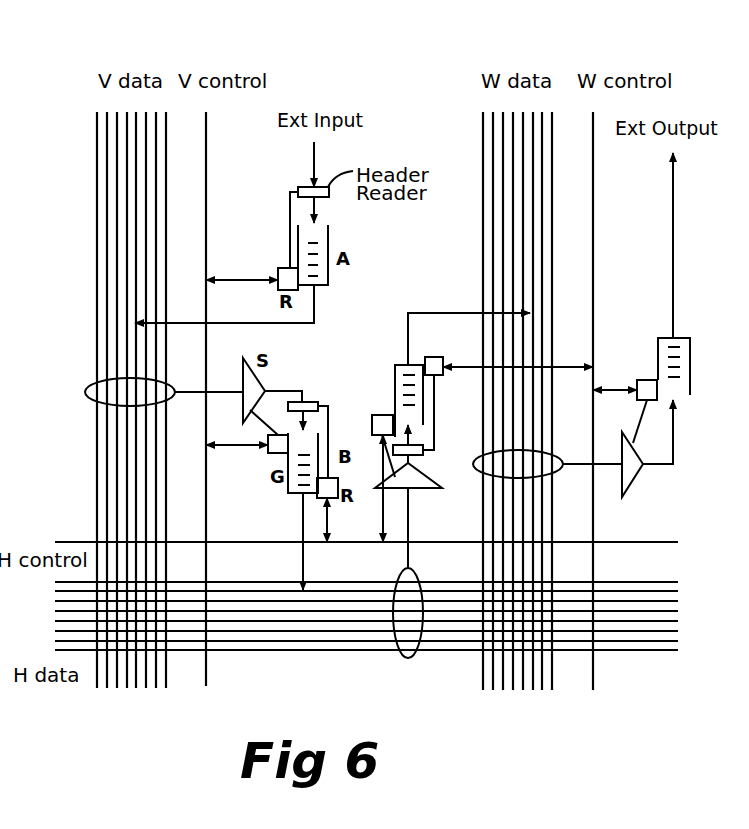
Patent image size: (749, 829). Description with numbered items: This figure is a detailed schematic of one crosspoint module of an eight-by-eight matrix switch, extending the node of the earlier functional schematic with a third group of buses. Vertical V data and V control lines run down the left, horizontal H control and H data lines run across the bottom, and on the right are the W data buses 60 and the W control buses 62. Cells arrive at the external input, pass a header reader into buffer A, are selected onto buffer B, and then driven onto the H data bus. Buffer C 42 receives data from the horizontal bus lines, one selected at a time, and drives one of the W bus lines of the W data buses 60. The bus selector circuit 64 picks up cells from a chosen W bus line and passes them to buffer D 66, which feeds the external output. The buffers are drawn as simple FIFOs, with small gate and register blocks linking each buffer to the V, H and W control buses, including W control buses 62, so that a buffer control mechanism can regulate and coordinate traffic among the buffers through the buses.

The buffer C 42 is at (397, 360).
The W data buses 60 is at (482, 666).
The W control buses 62 is at (593, 663).
The bus selector circuit 64 is at (632, 480).
The buffer D 66 is at (682, 337).